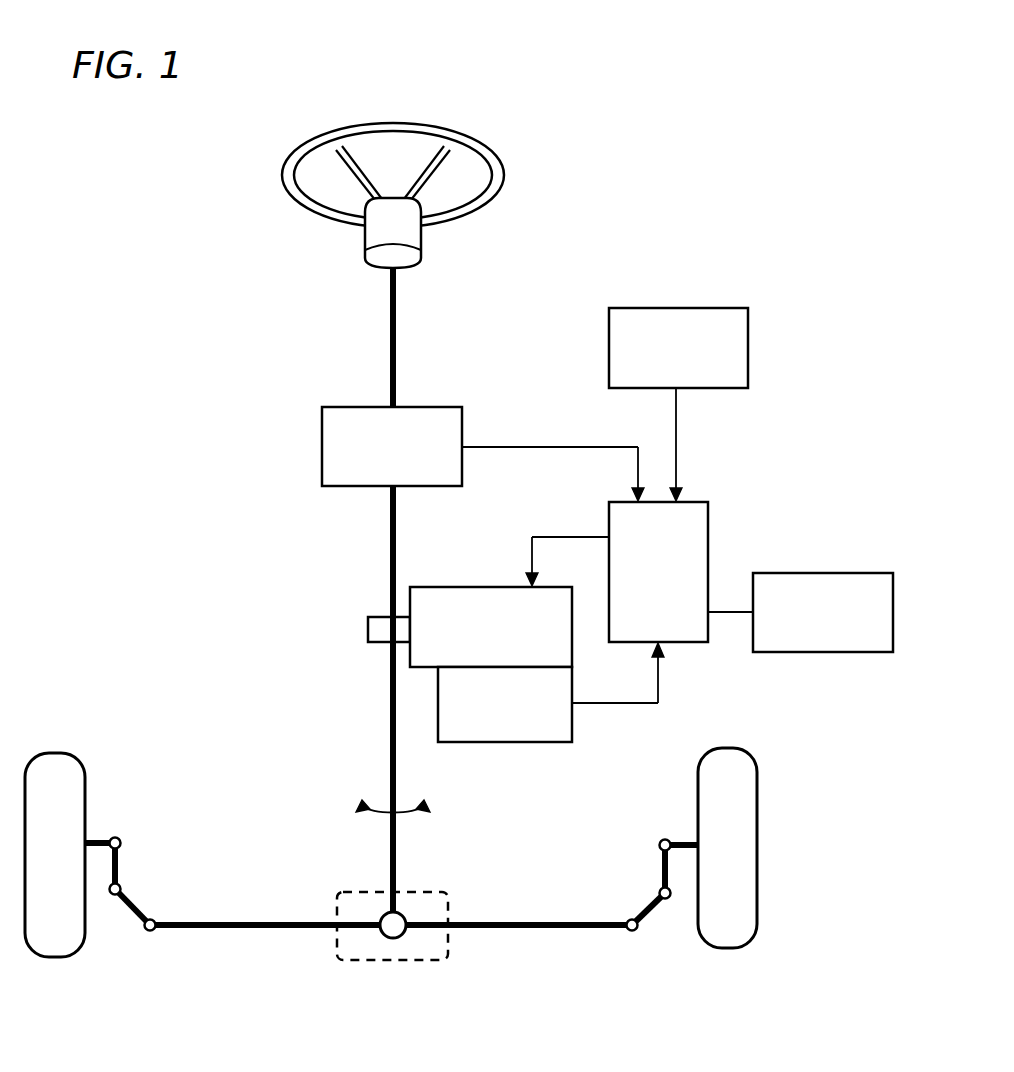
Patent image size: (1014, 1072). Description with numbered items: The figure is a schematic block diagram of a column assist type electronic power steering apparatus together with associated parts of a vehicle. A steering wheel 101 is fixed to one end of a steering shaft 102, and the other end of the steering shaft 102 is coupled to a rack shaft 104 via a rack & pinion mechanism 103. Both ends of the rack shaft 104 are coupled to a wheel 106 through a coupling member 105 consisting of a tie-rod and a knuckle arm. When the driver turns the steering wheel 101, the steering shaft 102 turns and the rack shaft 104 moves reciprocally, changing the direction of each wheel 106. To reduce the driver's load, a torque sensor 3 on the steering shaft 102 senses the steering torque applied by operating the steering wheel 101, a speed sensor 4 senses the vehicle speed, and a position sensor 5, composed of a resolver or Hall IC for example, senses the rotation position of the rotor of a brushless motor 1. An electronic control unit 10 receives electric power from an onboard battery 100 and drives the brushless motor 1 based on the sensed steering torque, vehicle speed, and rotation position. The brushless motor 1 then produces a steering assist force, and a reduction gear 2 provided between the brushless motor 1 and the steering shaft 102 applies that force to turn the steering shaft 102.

The brushless motor 1 is at (485, 587).
The reduction gear 2 is at (372, 615).
The torque sensor 3 is at (322, 447).
The speed sensor 4 is at (678, 308).
The position sensor 5 is at (504, 742).
The electronic control unit 10 is at (708, 533).
The onboard battery 100 is at (823, 652).
The steering wheel 101 is at (505, 178).
The steering shaft 102 is at (390, 338).
The rack & pinion mechanism 103 is at (397, 960).
The rack shaft 104 is at (529, 928).
The coupling member 105 is at (148, 894).
The wheel 106 is at (56, 957).